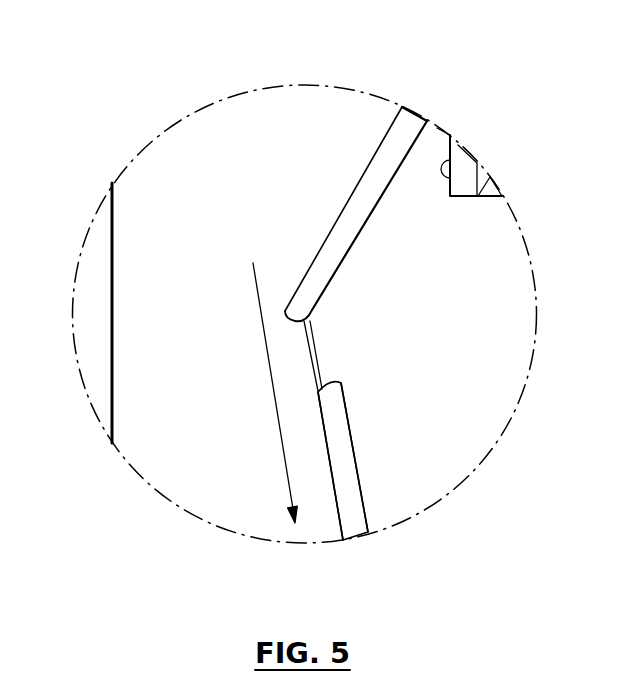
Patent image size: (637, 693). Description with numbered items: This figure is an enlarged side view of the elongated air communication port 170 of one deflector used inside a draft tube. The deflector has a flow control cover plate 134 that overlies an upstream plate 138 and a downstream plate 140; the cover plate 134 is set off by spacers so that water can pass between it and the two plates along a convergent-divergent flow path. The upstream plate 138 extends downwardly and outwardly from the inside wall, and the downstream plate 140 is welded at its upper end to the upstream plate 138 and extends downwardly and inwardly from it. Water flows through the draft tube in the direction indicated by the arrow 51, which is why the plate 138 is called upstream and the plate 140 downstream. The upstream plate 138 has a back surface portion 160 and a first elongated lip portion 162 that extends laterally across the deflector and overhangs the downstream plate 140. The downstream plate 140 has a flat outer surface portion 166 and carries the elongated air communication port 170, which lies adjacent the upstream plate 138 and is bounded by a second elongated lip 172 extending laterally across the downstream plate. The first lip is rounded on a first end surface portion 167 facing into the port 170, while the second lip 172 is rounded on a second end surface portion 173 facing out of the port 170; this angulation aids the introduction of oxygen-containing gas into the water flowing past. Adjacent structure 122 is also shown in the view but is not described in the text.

The direction of water flow 51 is at (287, 472).
The housing bracket 122 is at (450, 160).
The flow control cover plate 134 is at (105, 385).
The upstream plate 138 is at (388, 135).
The downstream plate 140 is at (357, 520).
The back surface portion 160 is at (398, 170).
The first elongated lip portion 162 is at (312, 298).
The flat outer surface portion 166 is at (328, 447).
The first end surface portion 167 is at (307, 318).
The elongated air communication port 170 is at (328, 362).
The second elongated lip 172 is at (322, 393).
The second end surface portion 173 is at (350, 415).